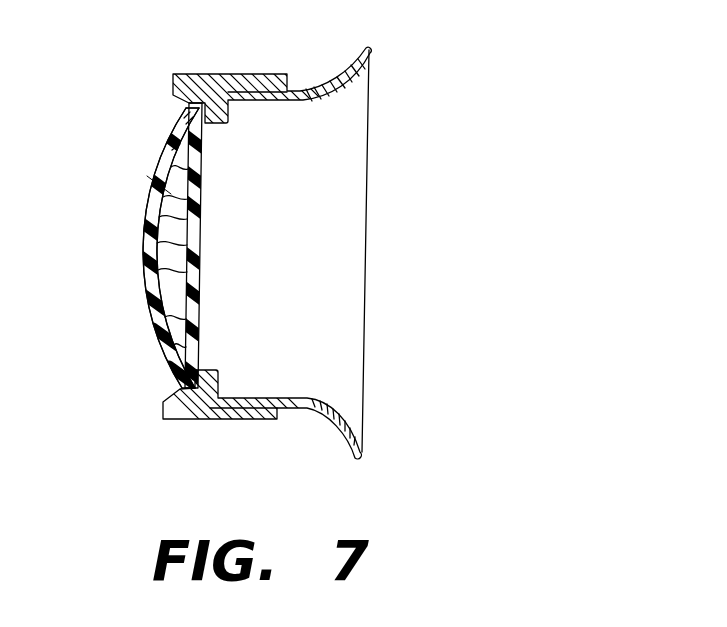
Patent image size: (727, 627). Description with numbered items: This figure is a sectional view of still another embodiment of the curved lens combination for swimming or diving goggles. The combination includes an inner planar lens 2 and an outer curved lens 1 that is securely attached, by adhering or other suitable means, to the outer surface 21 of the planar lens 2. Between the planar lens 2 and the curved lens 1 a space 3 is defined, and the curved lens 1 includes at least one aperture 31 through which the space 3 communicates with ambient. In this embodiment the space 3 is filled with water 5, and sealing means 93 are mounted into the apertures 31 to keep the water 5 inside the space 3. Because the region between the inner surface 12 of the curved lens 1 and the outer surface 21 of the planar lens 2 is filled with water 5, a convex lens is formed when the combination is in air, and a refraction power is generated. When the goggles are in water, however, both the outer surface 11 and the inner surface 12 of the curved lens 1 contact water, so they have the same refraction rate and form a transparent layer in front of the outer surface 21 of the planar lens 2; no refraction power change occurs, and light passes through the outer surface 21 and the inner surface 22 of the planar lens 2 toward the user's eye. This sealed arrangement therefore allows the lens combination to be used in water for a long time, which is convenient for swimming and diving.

The outer curved lens 1 is at (153, 253).
The outer surface of the curved lens 11 is at (147, 207).
The inner surface of the curved lens 12 is at (157, 283).
The inner planar lens 2 is at (192, 202).
The outer surface of the planar lens 21 is at (188, 237).
The inner surface of the planar lens 22 is at (198, 313).
The space 3 is at (178, 150).
The aperture 31 is at (182, 128).
The water 5 is at (175, 180).
The sealing means 93 is at (184, 108).